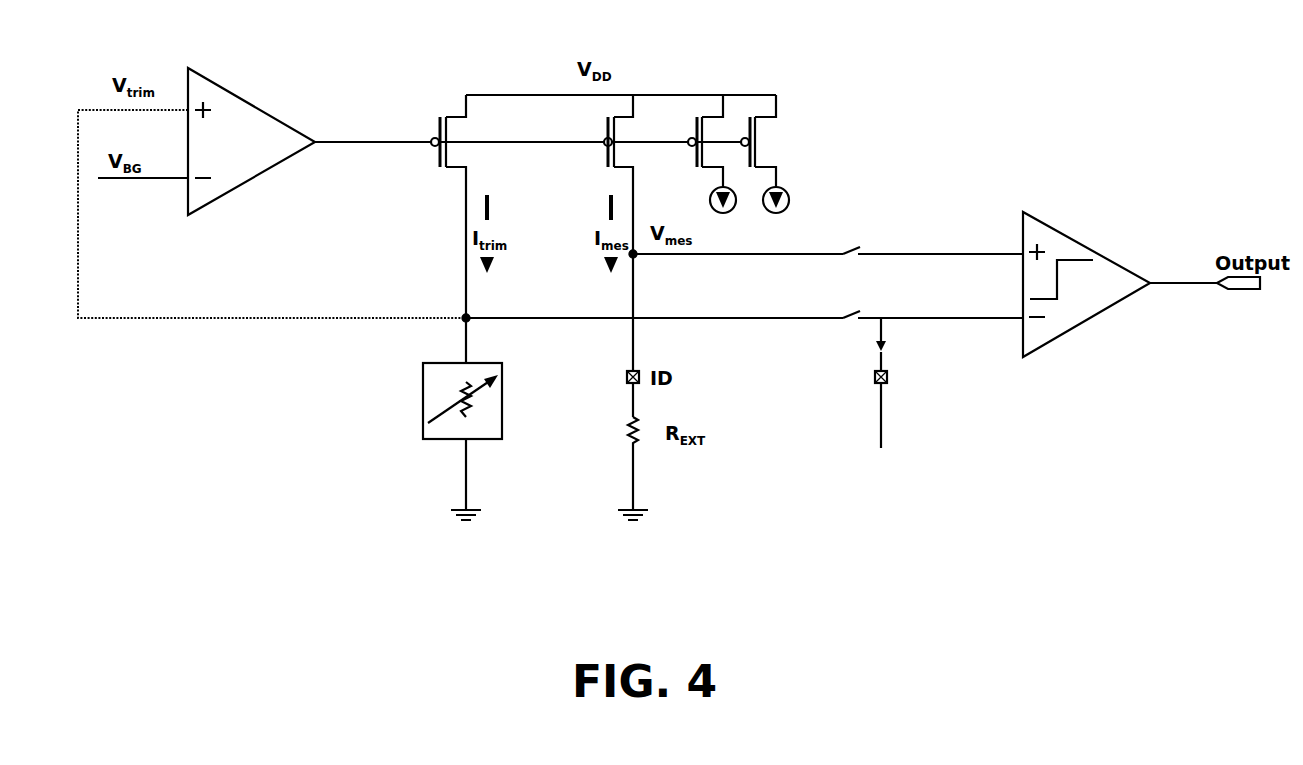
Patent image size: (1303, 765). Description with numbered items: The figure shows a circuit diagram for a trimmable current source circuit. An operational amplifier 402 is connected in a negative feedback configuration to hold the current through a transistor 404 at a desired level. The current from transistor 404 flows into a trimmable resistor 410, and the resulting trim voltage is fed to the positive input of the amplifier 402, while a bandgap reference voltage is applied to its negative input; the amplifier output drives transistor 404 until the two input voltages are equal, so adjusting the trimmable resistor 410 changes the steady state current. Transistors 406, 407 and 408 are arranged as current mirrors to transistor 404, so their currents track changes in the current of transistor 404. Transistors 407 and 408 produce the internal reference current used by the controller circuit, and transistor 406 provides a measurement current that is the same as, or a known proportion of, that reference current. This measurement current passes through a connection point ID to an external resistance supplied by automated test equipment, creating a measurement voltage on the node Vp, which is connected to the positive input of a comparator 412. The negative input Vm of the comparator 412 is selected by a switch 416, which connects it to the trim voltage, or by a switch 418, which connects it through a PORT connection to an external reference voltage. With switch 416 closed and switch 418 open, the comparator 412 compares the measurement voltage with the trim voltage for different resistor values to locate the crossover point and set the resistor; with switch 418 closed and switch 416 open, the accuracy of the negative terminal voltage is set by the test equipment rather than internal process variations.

The operational amplifier 402 is at (231, 95).
The transistor 404 is at (455, 135).
The transistor 406 is at (623, 135).
The transistor 407 is at (714, 128).
The transistor 408 is at (762, 152).
The trimmable resistor 410 is at (502, 363).
The comparator 412 is at (1068, 236).
The switch 416 is at (856, 305).
The switch 418 is at (884, 347).